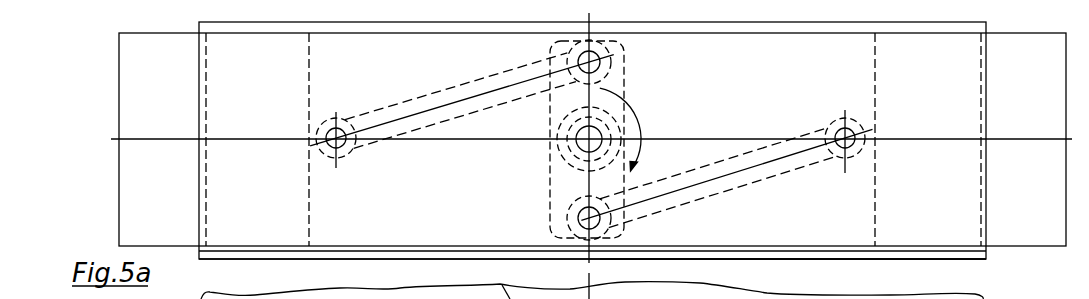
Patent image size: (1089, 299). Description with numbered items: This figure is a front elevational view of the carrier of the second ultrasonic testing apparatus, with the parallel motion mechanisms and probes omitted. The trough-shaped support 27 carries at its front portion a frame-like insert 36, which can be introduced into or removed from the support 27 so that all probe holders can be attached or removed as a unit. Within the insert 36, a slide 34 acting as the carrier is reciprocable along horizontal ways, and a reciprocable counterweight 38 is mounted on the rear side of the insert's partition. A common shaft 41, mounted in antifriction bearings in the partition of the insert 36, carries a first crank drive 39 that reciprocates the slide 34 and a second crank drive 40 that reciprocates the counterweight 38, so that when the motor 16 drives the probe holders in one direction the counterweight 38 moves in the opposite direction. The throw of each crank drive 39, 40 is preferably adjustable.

The counterweight 38 is at (138, 113).
The slide 34 is at (1026, 229).
The trough-shaped support 27 is at (910, 253).
The frame-like insert 36 is at (793, 273).
The shaft 41 is at (623, 122).
The second crank drive 40 is at (437, 113).
The first crank drive 39 is at (778, 150).
The motor 16 is at (675, 282).